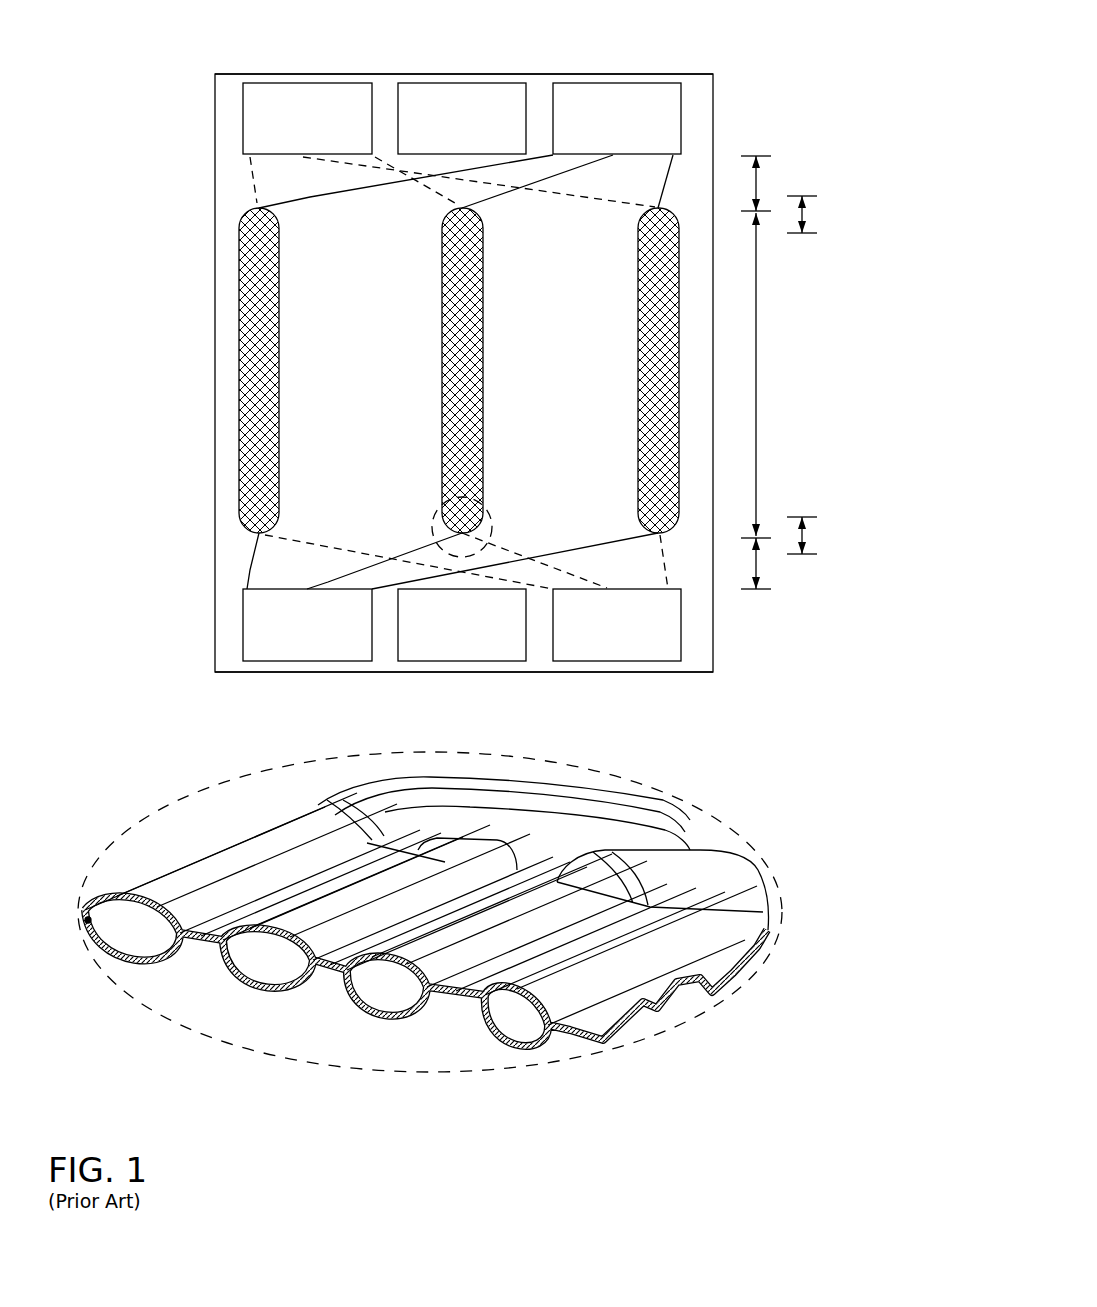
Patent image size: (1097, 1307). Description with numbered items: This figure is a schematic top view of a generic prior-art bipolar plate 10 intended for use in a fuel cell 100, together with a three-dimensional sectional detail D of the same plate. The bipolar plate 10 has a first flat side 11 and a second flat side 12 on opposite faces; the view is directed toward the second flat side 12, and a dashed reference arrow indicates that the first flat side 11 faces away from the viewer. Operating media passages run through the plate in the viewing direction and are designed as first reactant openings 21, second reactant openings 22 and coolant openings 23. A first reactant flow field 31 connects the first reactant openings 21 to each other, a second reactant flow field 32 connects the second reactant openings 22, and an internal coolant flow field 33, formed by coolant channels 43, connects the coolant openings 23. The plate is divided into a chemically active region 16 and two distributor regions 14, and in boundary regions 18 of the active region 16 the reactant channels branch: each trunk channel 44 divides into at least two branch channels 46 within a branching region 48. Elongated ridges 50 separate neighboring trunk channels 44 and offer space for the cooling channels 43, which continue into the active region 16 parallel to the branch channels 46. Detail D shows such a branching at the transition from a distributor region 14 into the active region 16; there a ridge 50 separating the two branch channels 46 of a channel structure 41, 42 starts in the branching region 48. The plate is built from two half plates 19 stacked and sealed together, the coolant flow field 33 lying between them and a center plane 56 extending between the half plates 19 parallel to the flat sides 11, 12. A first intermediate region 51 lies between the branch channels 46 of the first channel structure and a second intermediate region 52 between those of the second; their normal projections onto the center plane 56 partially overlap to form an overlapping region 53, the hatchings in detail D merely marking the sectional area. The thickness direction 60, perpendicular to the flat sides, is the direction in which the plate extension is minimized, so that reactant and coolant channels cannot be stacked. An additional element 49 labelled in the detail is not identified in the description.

The fuel cell 100 is at (725, 53).
The bipolar plate 10 is at (730, 83).
The first flat side 11 is at (703, 622).
The second flat side 12 is at (700, 158).
The distributor region 14 is at (756, 185).
The active region 16 is at (756, 355).
The boundary region 18 is at (802, 214).
The half plate 19 is at (88, 920).
The first reactant opening 21 is at (462, 372).
The second reactant opening 22 is at (462, 372).
The coolant opening 23 is at (462, 372).
The first reactant flow field 31 is at (153, 990).
The second reactant flow field 32 is at (460, 355).
The coolant flow field 33 is at (133, 937).
The channel structure 41 is at (252, 175).
The channel structure 42 is at (439, 331).
The coolant channel 43 is at (84, 910).
The trunk channel 44 is at (310, 197).
The branch channel 46 is at (277, 428).
The branching region 48 is at (244, 205).
The fold 49 is at (250, 982).
The ridge 50 is at (307, 825).
The first intermediate region 51 is at (258, 296).
The second intermediate region 52 is at (250, 334).
The overlapping region 53 is at (246, 268).
The center plane 56 is at (458, 1005).
The thickness direction 60 is at (523, 992).